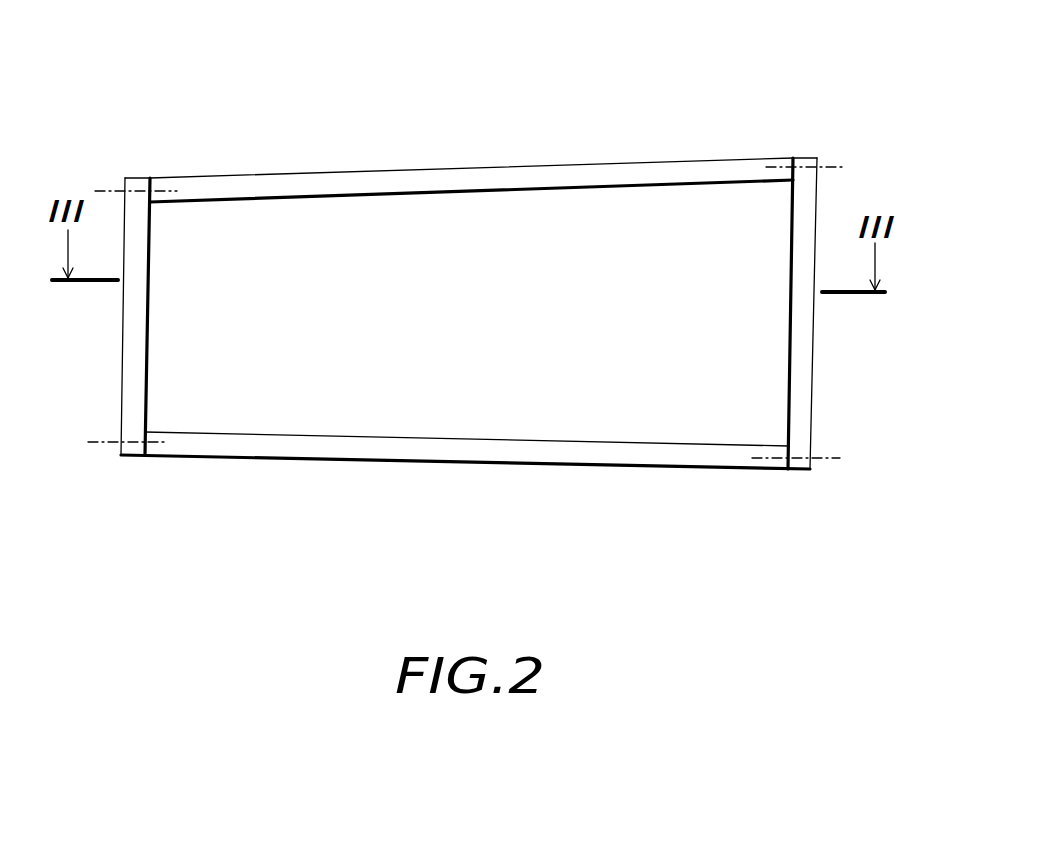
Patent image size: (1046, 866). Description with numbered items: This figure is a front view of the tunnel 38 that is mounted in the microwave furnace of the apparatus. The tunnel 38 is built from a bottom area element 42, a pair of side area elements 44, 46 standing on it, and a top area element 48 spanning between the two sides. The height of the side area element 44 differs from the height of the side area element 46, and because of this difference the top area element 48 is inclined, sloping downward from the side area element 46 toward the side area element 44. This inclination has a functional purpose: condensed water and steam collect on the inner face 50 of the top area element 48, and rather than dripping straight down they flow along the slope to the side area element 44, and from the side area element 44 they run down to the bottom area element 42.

The tunnel 38 is at (477, 290).
The bottom area element 42 is at (455, 450).
The side area element 44 is at (131, 353).
The side area element 46 is at (800, 362).
The top area element 48 is at (457, 178).
The inner face 50 is at (520, 207).